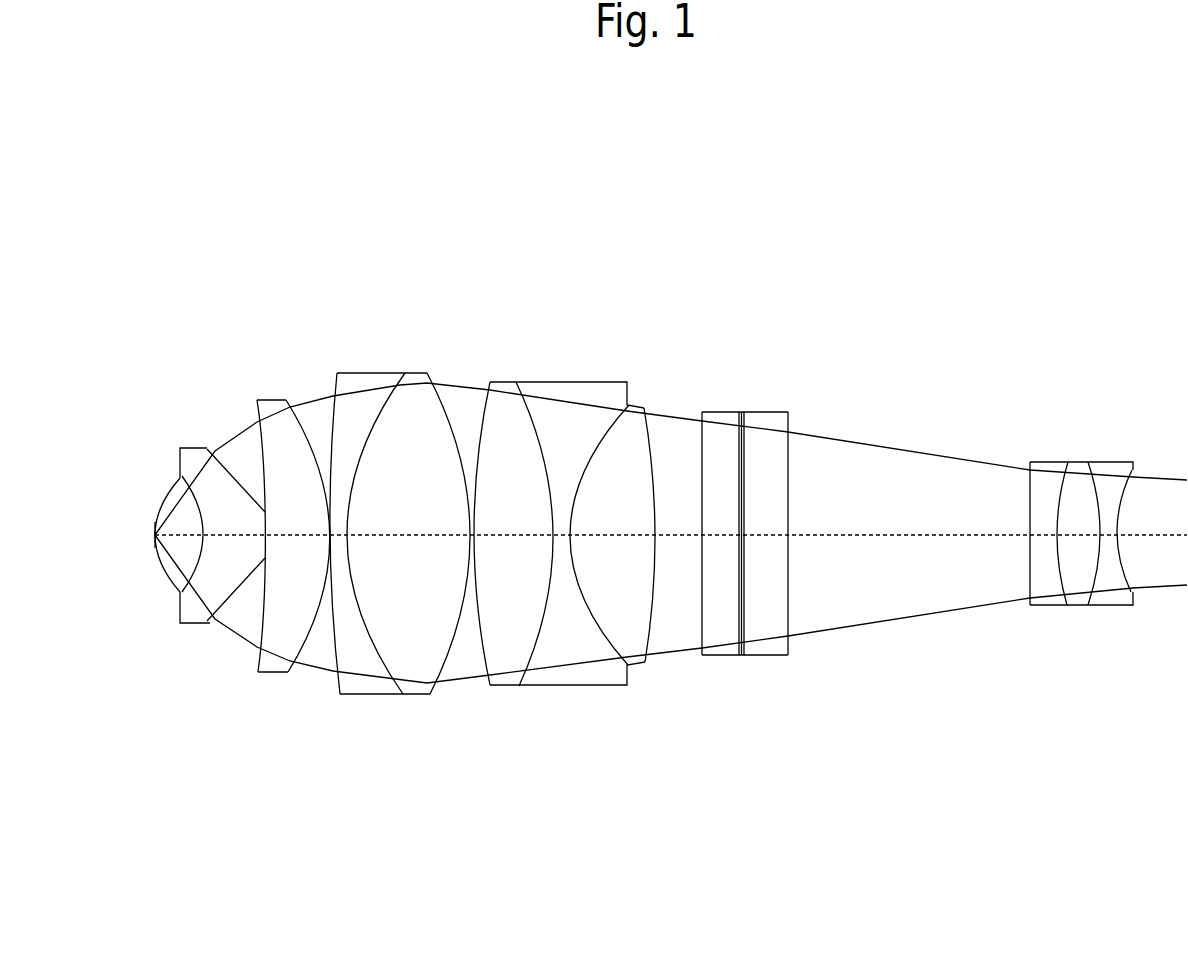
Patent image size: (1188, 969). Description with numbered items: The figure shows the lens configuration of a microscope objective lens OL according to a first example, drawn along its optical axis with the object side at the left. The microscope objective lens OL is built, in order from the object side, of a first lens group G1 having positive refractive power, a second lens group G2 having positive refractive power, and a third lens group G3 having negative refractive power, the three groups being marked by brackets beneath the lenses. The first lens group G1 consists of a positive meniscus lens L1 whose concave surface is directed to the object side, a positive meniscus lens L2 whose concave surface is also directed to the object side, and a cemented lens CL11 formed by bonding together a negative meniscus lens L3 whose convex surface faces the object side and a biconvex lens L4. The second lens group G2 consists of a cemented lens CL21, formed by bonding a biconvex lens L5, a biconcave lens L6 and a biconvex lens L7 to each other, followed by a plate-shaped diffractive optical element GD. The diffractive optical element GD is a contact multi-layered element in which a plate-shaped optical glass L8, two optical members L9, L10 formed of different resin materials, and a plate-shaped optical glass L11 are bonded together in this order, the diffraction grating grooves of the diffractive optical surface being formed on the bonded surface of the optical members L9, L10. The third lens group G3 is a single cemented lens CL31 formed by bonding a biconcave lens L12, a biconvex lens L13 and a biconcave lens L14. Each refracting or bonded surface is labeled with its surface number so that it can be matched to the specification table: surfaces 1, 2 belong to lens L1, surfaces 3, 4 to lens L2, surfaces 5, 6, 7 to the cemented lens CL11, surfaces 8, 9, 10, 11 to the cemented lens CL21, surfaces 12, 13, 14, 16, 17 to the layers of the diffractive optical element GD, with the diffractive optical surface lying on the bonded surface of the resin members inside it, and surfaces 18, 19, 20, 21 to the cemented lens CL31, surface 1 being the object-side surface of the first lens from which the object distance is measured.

The microscope objective lens OL is at (850, 238).
The first lens group G1 is at (473, 785).
The second lens group G2 is at (793, 785).
The third lens group G3 is at (1147, 785).
The positive meniscus lens L1 is at (183, 447).
The positive meniscus lens L2 is at (258, 400).
The cemented lens CL11 is at (338, 288).
The negative meniscus lens L3 is at (357, 373).
The biconvex lens L4 is at (417, 375).
The cemented lens CL21 is at (478, 288).
The biconvex lens L5 is at (502, 381).
The biconcave lens L6 is at (547, 382).
The biconvex lens L7 is at (636, 405).
The diffractive optical element GD is at (825, 332).
The plate-shaped optical glass L8 is at (715, 411).
The optical member L9 is at (739, 411).
The optical member L10 is at (742, 411).
The plate-shaped optical glass L11 is at (768, 411).
The cemented lens CL31 is at (1147, 374).
The biconcave lens L12 is at (1050, 461).
The biconvex lens L13 is at (1077, 461).
The biconcave lens L14 is at (1107, 461).
The optical surface 1 is at (183, 583).
The optical surface 2 is at (212, 624).
The optical surface 3 is at (258, 653).
The optical surface 4 is at (289, 660).
The optical surface 5 is at (340, 686).
The optical surface 6 is at (403, 685).
The optical surface 7 is at (427, 685).
The optical surface 8 is at (490, 684).
The optical surface 9 is at (521, 687).
The optical surface 10 is at (627, 660).
The optical surface 11 is at (647, 660).
The optical surface 12 is at (702, 652).
The optical surface 13 is at (738, 653).
The optical surface 14 is at (740, 657).
The optical surface 16 is at (745, 653).
The optical surface 17 is at (788, 653).
The optical surface 18 is at (1031, 603).
The optical surface 19 is at (1067, 603).
The optical surface 20 is at (1088, 603).
The optical surface 21 is at (1133, 593).